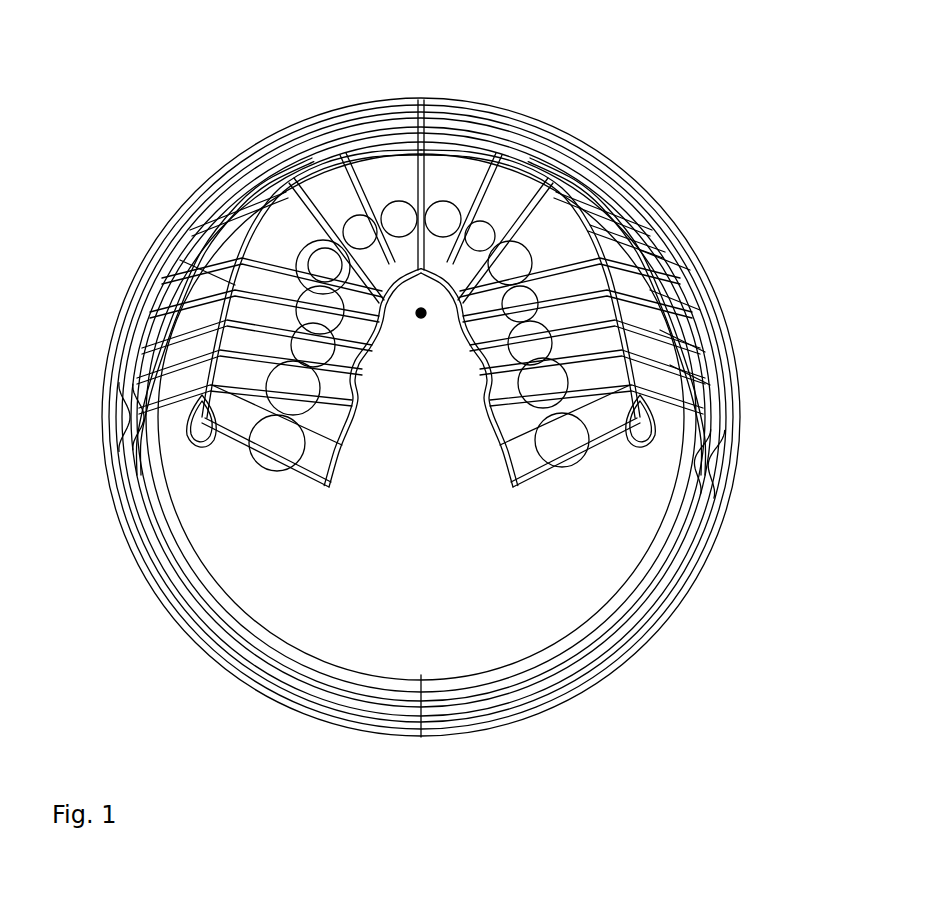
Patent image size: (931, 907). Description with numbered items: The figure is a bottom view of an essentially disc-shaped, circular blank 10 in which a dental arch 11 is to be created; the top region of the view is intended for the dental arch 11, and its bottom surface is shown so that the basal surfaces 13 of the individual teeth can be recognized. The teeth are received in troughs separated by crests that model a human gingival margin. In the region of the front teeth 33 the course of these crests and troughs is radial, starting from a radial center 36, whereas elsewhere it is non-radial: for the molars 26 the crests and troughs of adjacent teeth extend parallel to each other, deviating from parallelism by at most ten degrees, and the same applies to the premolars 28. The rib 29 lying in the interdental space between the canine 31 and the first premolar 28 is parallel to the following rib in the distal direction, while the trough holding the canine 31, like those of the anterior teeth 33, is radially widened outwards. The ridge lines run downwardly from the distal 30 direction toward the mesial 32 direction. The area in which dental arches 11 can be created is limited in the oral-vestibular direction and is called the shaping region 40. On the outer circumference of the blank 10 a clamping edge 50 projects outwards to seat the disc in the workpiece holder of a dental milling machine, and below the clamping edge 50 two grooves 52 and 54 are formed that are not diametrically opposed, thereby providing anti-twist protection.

The blank 10 is at (570, 598).
The dental arch 11 is at (323, 262).
The basal surfaces 13 is at (172, 272).
The molars 26 is at (690, 333).
The premolars 28 is at (655, 247).
The rib 29 is at (628, 215).
The distal 30 is at (453, 300).
The canine 31 is at (600, 198).
The mesial 32 is at (447, 180).
The front teeth 33 is at (400, 212).
The radial center 36 is at (421, 330).
The shaping region 40 is at (680, 436).
The clamping edge 50 is at (212, 617).
The groove 52 is at (122, 412).
The groove 54 is at (718, 452).